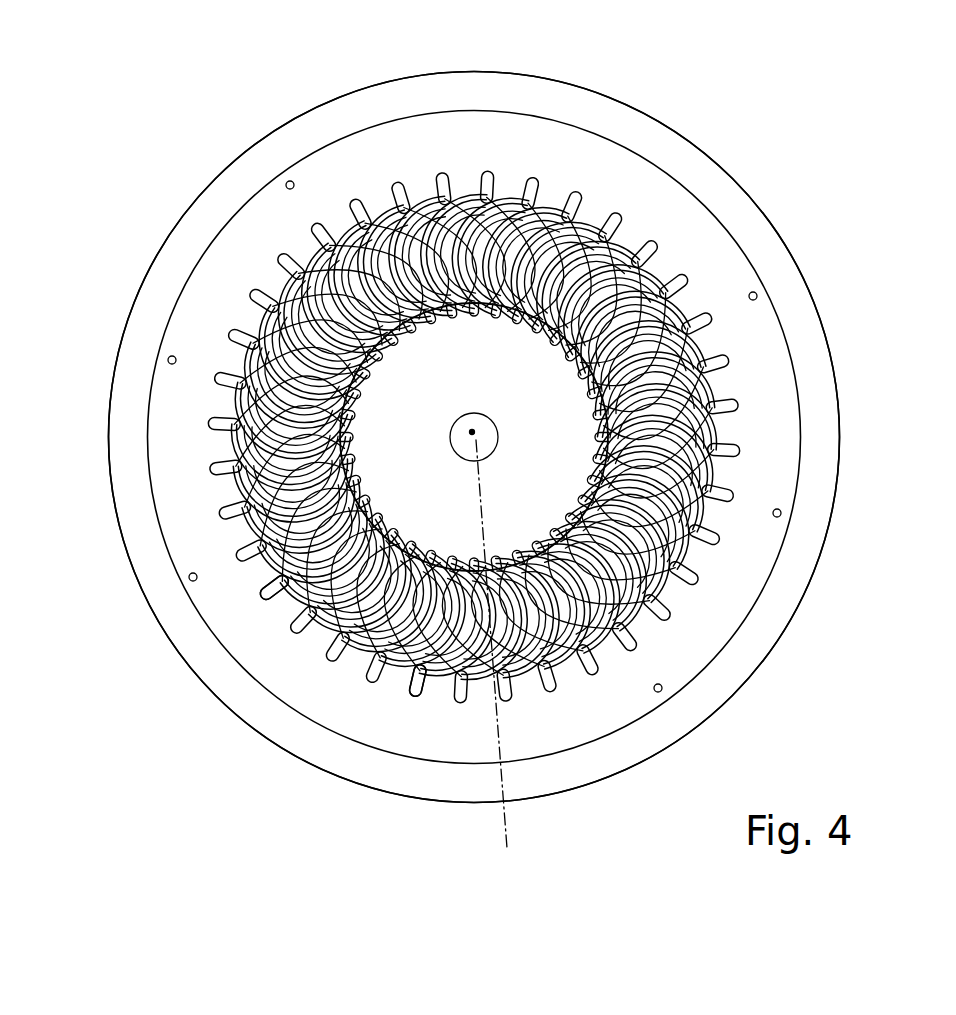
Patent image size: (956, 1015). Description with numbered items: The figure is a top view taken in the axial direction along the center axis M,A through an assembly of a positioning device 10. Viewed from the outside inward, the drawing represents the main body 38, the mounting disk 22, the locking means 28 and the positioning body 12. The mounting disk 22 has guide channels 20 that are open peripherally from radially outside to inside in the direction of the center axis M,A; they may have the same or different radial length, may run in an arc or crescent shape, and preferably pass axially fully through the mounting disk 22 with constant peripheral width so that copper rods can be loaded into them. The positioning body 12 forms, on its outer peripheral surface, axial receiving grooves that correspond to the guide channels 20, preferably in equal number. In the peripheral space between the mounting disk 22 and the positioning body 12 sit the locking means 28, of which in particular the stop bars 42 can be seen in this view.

The positioning device 10 is at (219, 118).
The positioning body 12 is at (385, 380).
The guide channels 20 is at (417, 700).
The mounting disk 22 is at (255, 233).
The locking means 28 is at (306, 440).
The main body 38 is at (293, 737).
The stop bars 42 is at (265, 580).
The center axis M,A is at (506, 661).